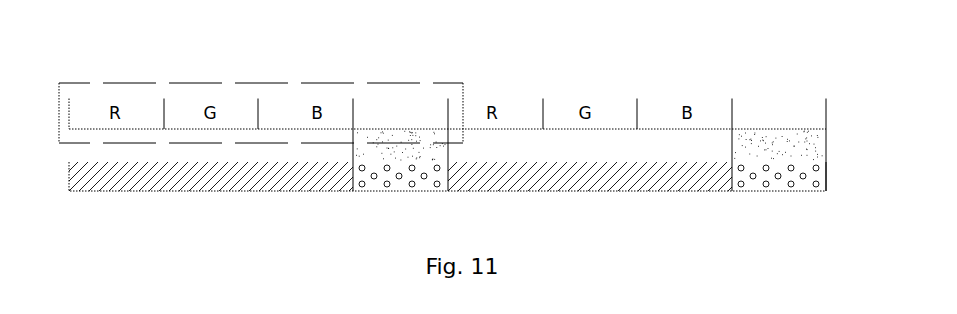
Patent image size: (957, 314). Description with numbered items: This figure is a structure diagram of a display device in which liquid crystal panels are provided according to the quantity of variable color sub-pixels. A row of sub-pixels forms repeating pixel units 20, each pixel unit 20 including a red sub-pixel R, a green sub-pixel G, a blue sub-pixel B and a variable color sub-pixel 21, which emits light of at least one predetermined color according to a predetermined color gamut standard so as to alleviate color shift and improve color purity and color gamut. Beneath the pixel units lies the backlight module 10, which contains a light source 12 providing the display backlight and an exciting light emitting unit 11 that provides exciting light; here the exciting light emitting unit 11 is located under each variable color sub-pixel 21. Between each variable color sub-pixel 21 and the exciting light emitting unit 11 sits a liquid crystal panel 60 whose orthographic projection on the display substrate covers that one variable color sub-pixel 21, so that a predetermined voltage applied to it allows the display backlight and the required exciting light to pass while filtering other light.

The backlight module 10 is at (827, 177).
The exciting light emitting unit 11 is at (775, 175).
The light source 12 is at (543, 175).
The pixel unit 20 is at (463, 83).
The variable color sub-pixel 21 is at (589, 114).
The liquid crystal panel 60 is at (763, 143).